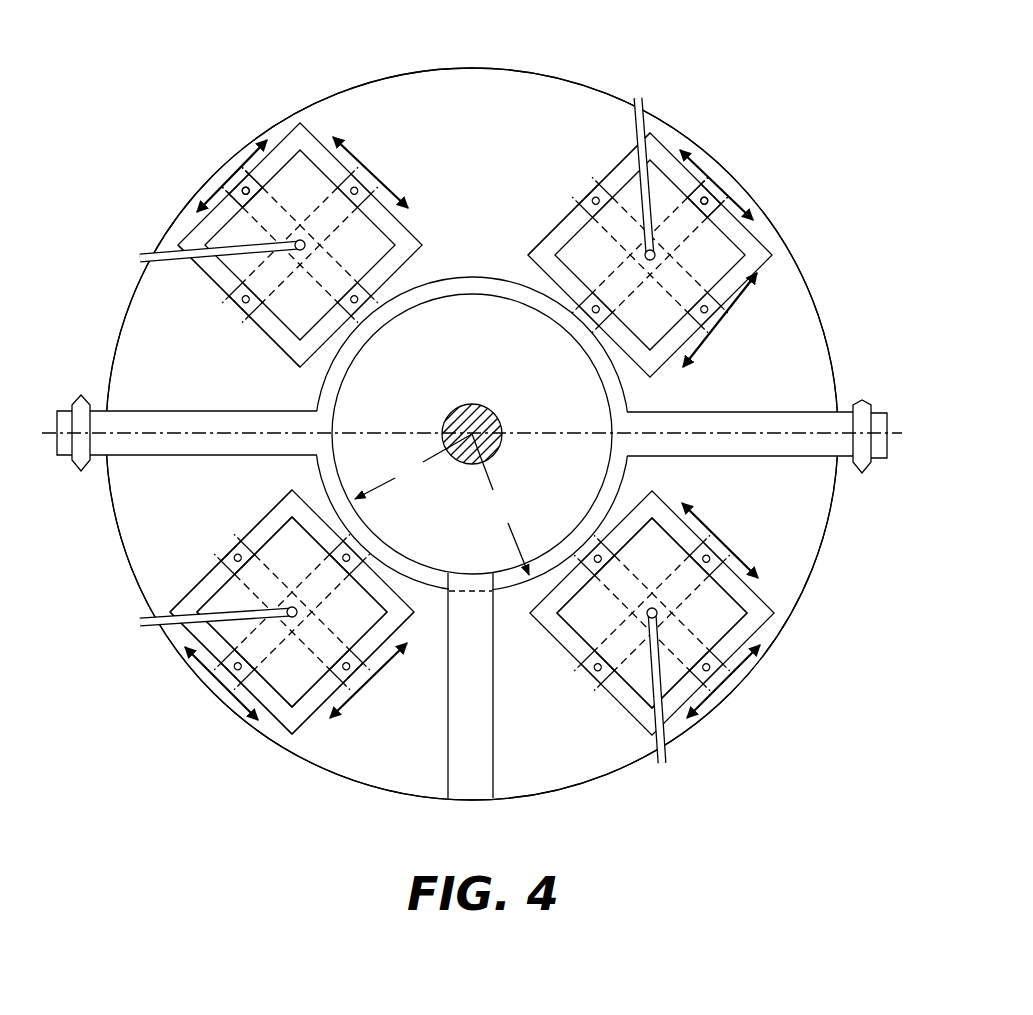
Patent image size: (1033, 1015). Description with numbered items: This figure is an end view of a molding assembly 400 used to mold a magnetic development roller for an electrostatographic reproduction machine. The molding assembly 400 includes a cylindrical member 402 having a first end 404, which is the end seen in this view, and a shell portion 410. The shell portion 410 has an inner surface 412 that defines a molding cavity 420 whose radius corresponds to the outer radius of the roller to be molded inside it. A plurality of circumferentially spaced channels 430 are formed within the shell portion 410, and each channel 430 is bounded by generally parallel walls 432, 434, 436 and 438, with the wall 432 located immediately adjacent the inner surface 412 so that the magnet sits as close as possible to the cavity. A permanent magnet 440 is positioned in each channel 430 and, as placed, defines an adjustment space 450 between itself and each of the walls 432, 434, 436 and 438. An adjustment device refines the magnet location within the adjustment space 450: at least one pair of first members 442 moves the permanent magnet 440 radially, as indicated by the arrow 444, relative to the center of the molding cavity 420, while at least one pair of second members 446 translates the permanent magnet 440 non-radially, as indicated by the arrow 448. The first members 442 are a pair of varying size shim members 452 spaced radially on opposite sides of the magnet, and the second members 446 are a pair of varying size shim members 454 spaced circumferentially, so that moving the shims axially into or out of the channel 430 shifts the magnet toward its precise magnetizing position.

The molding assembly 400 is at (748, 146).
The cylindrical member 402 is at (466, 66).
The first end 404 is at (113, 330).
The shell portion 410 is at (542, 760).
The inner surface 412 is at (423, 283).
The molding cavity 420 is at (330, 387).
The channel 430 is at (500, 415).
The channel wall 432 is at (313, 353).
The channel wall 434 is at (267, 532).
The channel wall 436 is at (273, 708).
The channel wall 438 is at (307, 715).
The permanent magnet 440 is at (668, 158).
The first members 442 is at (383, 270).
The radial direction arrow 444 is at (370, 172).
The second members 446 is at (608, 180).
The non-radial direction arrow 448 is at (227, 177).
The adjustment space 450 is at (213, 272).
The shim members 452 is at (285, 143).
The shim members 454 is at (617, 358).